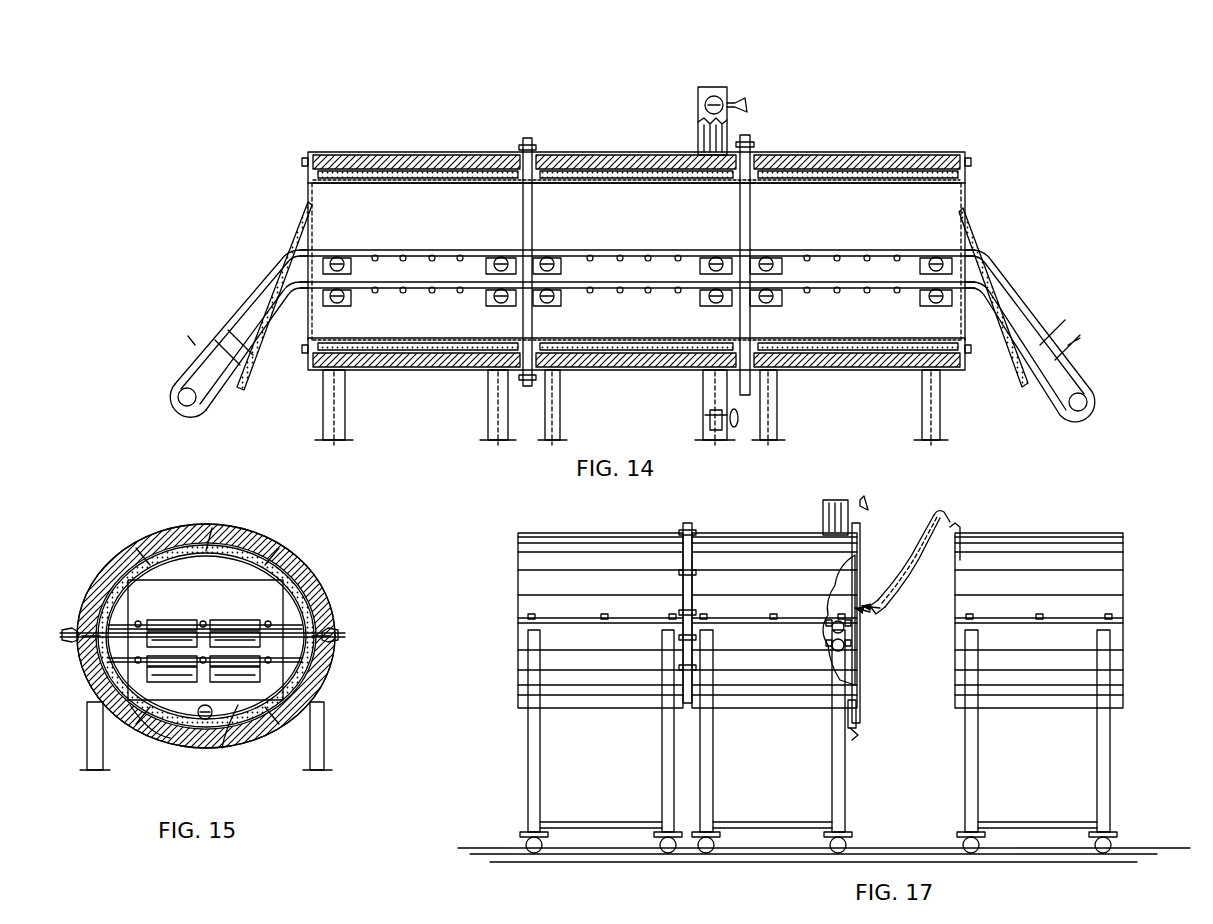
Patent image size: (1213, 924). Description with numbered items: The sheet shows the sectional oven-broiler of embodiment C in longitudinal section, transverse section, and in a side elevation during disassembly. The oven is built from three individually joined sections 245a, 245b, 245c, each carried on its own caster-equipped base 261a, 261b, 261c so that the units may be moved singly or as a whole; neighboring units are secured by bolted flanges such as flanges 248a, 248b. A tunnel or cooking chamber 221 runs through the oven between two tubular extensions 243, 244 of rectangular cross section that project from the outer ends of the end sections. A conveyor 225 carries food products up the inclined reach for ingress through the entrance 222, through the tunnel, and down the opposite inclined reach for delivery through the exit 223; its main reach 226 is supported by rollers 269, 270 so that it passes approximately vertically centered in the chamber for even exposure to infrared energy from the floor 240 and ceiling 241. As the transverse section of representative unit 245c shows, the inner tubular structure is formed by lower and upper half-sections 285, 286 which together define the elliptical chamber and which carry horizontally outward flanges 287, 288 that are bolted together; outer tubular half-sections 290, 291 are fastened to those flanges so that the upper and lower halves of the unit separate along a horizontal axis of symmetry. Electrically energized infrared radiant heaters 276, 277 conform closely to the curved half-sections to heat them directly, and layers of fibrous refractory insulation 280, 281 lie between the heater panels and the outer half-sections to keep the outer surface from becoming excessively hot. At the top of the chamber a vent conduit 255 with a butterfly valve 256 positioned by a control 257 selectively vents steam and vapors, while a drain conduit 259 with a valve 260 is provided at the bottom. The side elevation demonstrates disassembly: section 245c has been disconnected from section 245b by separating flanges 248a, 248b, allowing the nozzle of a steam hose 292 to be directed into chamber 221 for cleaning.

In FIG. 14, the tunnel or cooking chamber 221 is at (648, 215).
In FIG. 15, the tunnel or cooking chamber 221 is at (216, 578).
In FIG. 17, the tunnel or cooking chamber 221 is at (850, 590).
In FIG. 14, the entrance 222 is at (192, 352).
In FIG. 14, the exit 223 is at (1072, 368).
In FIG. 14, the conveyor 225 is at (452, 296).
In FIG. 14, the main reach 226 is at (643, 250).
In FIG. 15, the main reach 226 is at (178, 622).
In FIG. 14, the floor 240 is at (783, 340).
In FIG. 15, the floor 240 is at (206, 746).
In FIG. 14, the ceiling 241 is at (770, 186).
In FIG. 15, the ceiling 241 is at (250, 548).
In FIG. 14, the tubular extension 243 is at (270, 250).
In FIG. 14, the tubular extension 244 is at (995, 250).
In FIG. 17, the oven section 245a is at (605, 526).
In FIG. 17, the oven section 245b is at (757, 526).
In FIG. 14, the oven section 245c is at (805, 146).
In FIG. 15, the oven section 245c is at (148, 524).
In FIG. 17, the oven section 245c is at (1053, 524).
In FIG. 14, the flange 248a is at (748, 138).
In FIG. 17, the flange 248a is at (862, 545).
In FIG. 14, the flange 248b is at (748, 150).
In FIG. 17, the flange 248b is at (950, 524).
In FIG. 14, the vent conduit 255 is at (700, 95).
In FIG. 17, the vent conduit 255 is at (822, 515).
In FIG. 14, the butterfly valve 256 is at (718, 97).
In FIG. 14, the control 257 is at (745, 103).
In FIG. 17, the control 257 is at (865, 500).
In FIG. 14, the drain conduit 259 is at (706, 390).
In FIG. 17, the drain conduit 259 is at (858, 720).
In FIG. 14, the cam 260 is at (736, 428).
In FIG. 17, the caster-equipped base 261a is at (517, 790).
In FIG. 17, the caster-equipped base 261b is at (853, 778).
In FIG. 17, the caster-equipped base 261c is at (1120, 781).
In FIG. 15, the roller 269 is at (168, 632).
In FIG. 15, the roller 270 is at (160, 682).
In FIG. 14, the infrared radiant heater 276 is at (835, 356).
In FIG. 15, the infrared radiant heater 276 is at (140, 732).
In FIG. 14, the infrared radiant heater 277 is at (838, 180).
In FIG. 15, the infrared radiant heater 277 is at (180, 530).
In FIG. 14, the thermal insulating layer 280 is at (802, 375).
In FIG. 15, the thermal insulating layer 280 is at (235, 740).
In FIG. 14, the thermal insulating layer 281 is at (885, 156).
In FIG. 15, the thermal insulating layer 281 is at (300, 555).
In FIG. 15, the lower half-section 285 is at (168, 740).
In FIG. 15, the upper half-section 286 is at (210, 530).
In FIG. 15, the flange 287 is at (335, 640).
In FIG. 15, the flange 288 is at (328, 630).
In FIG. 15, the outer tubular half-section 290 is at (220, 750).
In FIG. 15, the outer tubular half-section 291 is at (283, 535).
In FIG. 17, the steam hose 292 is at (905, 595).